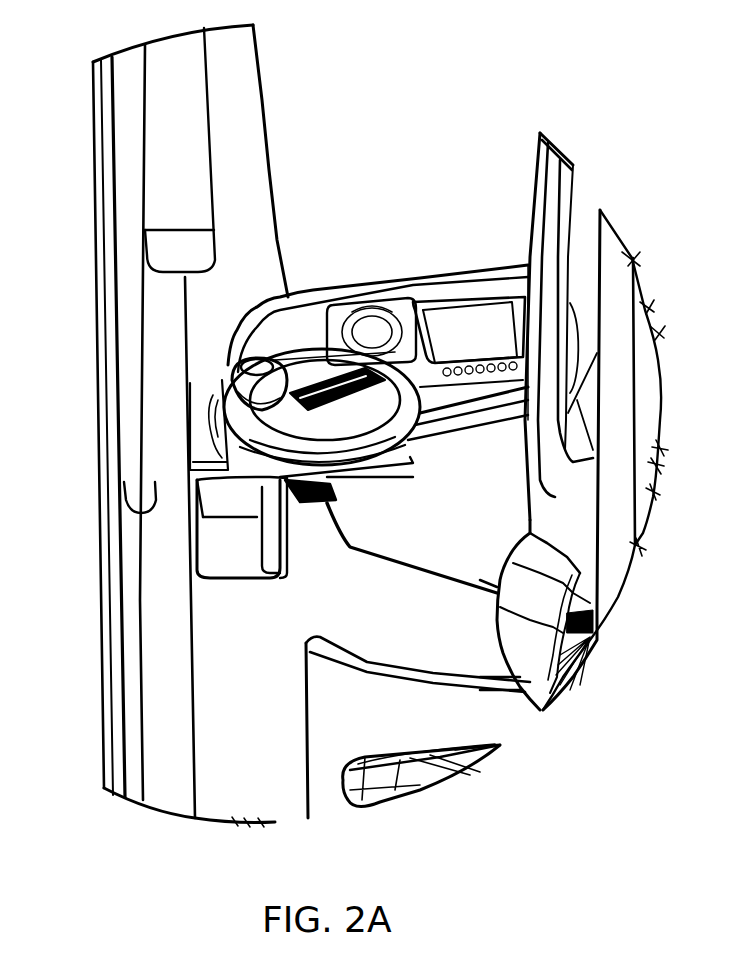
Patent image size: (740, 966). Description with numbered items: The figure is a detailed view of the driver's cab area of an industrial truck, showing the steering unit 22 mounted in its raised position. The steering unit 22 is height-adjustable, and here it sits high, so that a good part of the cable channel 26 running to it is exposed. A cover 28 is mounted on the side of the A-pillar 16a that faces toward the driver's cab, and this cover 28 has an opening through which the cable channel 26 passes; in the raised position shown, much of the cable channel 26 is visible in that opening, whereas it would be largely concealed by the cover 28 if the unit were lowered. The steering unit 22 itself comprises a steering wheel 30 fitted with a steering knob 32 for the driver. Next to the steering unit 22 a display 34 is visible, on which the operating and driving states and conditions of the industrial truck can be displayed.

The A-pillar 16a is at (242, 133).
The steering unit 22 is at (307, 320).
The cable channel 26 is at (223, 540).
The cover 28 is at (225, 812).
The steering wheel 30 is at (222, 433).
The steering knob 32 is at (220, 380).
The display 34 is at (440, 325).